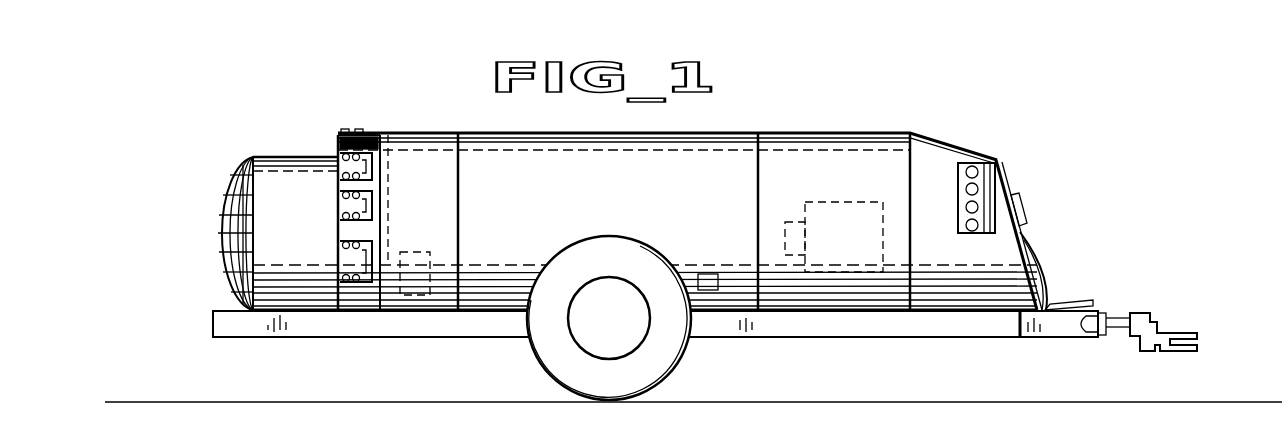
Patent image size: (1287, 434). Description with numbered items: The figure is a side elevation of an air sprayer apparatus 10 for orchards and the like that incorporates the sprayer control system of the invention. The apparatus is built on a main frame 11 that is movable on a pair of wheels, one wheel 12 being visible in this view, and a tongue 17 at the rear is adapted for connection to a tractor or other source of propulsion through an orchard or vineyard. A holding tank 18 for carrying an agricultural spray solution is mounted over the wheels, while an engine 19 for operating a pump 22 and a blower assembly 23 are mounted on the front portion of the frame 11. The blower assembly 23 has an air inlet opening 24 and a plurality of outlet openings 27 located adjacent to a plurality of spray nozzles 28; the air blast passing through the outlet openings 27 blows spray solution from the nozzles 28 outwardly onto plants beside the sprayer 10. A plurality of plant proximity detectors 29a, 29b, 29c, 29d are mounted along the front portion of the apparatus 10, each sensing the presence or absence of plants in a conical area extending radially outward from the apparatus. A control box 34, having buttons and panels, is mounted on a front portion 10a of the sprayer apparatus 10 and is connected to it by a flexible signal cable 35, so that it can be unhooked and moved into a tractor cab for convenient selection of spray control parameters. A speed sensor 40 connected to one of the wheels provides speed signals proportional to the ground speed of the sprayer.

The air sprayer apparatus 10 is at (756, 115).
The front portion 10a is at (1028, 238).
The main frame 11 is at (215, 323).
The wheel 12 is at (545, 361).
The tongue 17 is at (1150, 313).
The holding tank 18 is at (613, 150).
The engine 19 is at (838, 200).
The pump 22 is at (793, 216).
The blower assembly 23 is at (298, 150).
The air inlet opening 24 is at (218, 238).
The outlet openings 27 is at (344, 168).
The spray nozzles 28 is at (346, 129).
The plant proximity detector 29a is at (982, 163).
The plant proximity detector 29b is at (972, 187).
The plant proximity detector 29c is at (962, 218).
The plant proximity detector 29d is at (962, 226).
The control box 34 is at (1021, 210).
The flexible signal cable 35 is at (1043, 276).
The speed sensor 40 is at (714, 282).